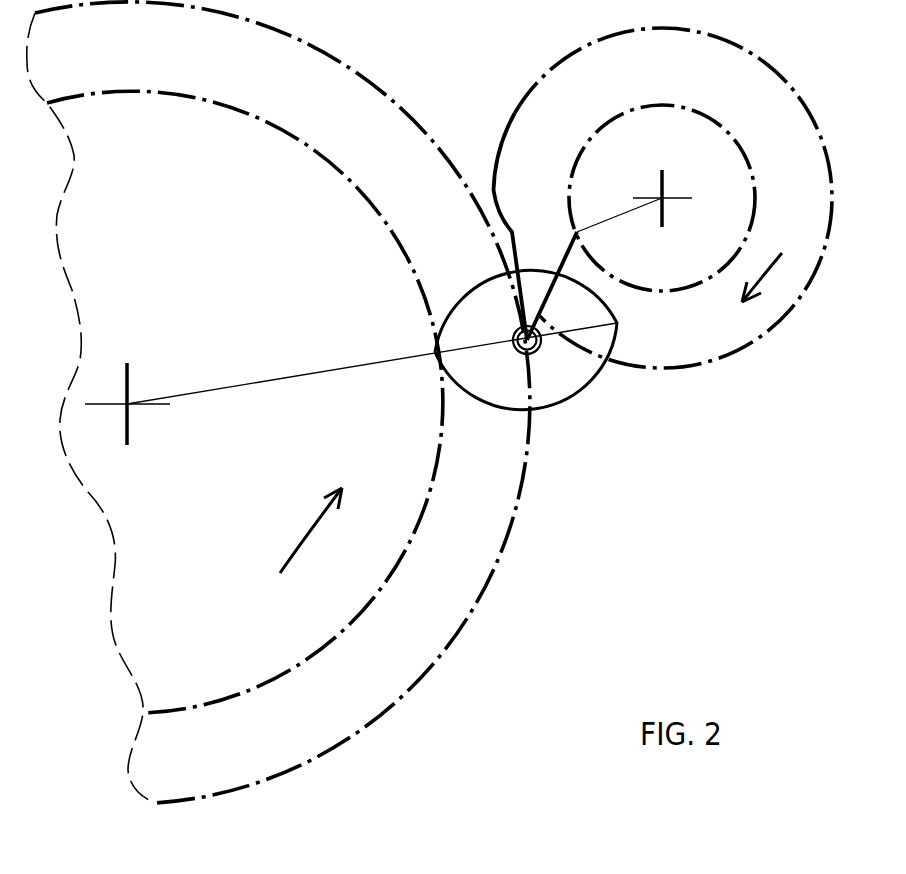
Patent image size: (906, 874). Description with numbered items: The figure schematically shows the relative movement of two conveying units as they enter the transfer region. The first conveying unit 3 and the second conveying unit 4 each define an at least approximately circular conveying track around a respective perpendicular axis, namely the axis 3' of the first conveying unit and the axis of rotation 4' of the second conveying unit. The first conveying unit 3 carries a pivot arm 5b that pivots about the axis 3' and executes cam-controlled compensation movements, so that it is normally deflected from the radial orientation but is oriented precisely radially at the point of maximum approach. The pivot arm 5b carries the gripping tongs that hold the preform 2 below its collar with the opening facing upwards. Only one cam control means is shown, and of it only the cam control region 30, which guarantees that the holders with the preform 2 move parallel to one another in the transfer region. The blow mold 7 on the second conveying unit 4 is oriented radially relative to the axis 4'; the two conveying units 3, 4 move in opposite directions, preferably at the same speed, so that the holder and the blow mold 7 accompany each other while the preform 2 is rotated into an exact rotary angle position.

The preform 2 is at (537, 346).
The first conveying unit 3 is at (673, 198).
The axis of the first conveying unit 3' is at (642, 190).
The second conveying unit 4 is at (278, 402).
The axis of rotation of the second conveying unit 4' is at (129, 394).
The pivot arm 5b is at (569, 256).
The blow mold 7 is at (487, 392).
The cam control region 30 is at (520, 250).